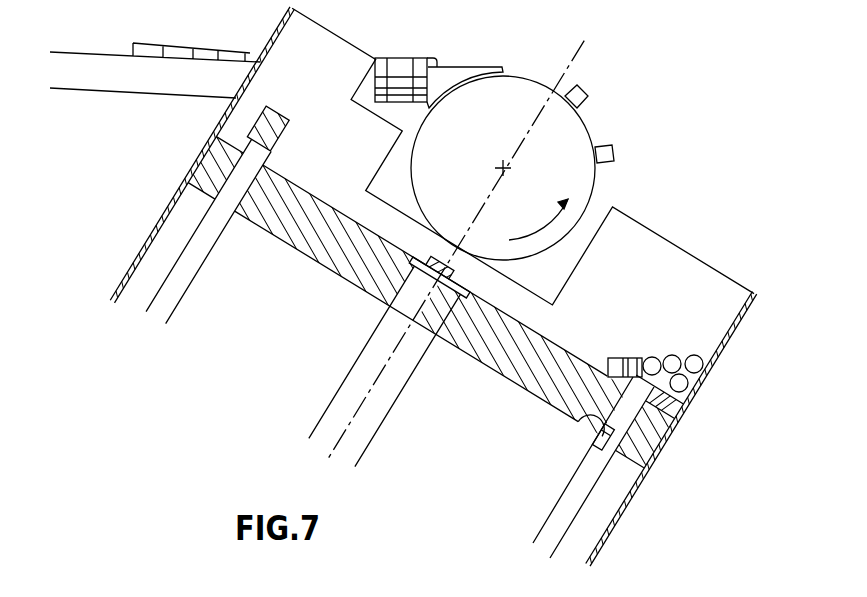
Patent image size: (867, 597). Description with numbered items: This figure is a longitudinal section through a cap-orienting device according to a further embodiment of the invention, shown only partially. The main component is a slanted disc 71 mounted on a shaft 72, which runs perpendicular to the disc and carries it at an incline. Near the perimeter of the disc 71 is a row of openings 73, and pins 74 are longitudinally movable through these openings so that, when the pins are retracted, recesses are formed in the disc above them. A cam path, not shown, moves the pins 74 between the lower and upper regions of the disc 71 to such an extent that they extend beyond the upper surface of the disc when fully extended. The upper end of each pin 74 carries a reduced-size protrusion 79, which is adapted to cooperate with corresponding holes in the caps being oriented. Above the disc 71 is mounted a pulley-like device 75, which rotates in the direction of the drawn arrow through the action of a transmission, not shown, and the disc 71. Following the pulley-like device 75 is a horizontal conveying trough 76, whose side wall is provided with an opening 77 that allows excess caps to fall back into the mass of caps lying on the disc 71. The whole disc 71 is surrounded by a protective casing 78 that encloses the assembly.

The slanted disc 71 is at (312, 258).
The shaft 72 is at (395, 397).
The openings 73 is at (590, 412).
The pins 74 is at (557, 517).
The pulley-like device 75 is at (578, 132).
The horizontal conveying trough 76 is at (453, 72).
The opening 77 is at (390, 100).
The protective casing 78 is at (748, 316).
The reduced-size protrusion 79 is at (610, 453).